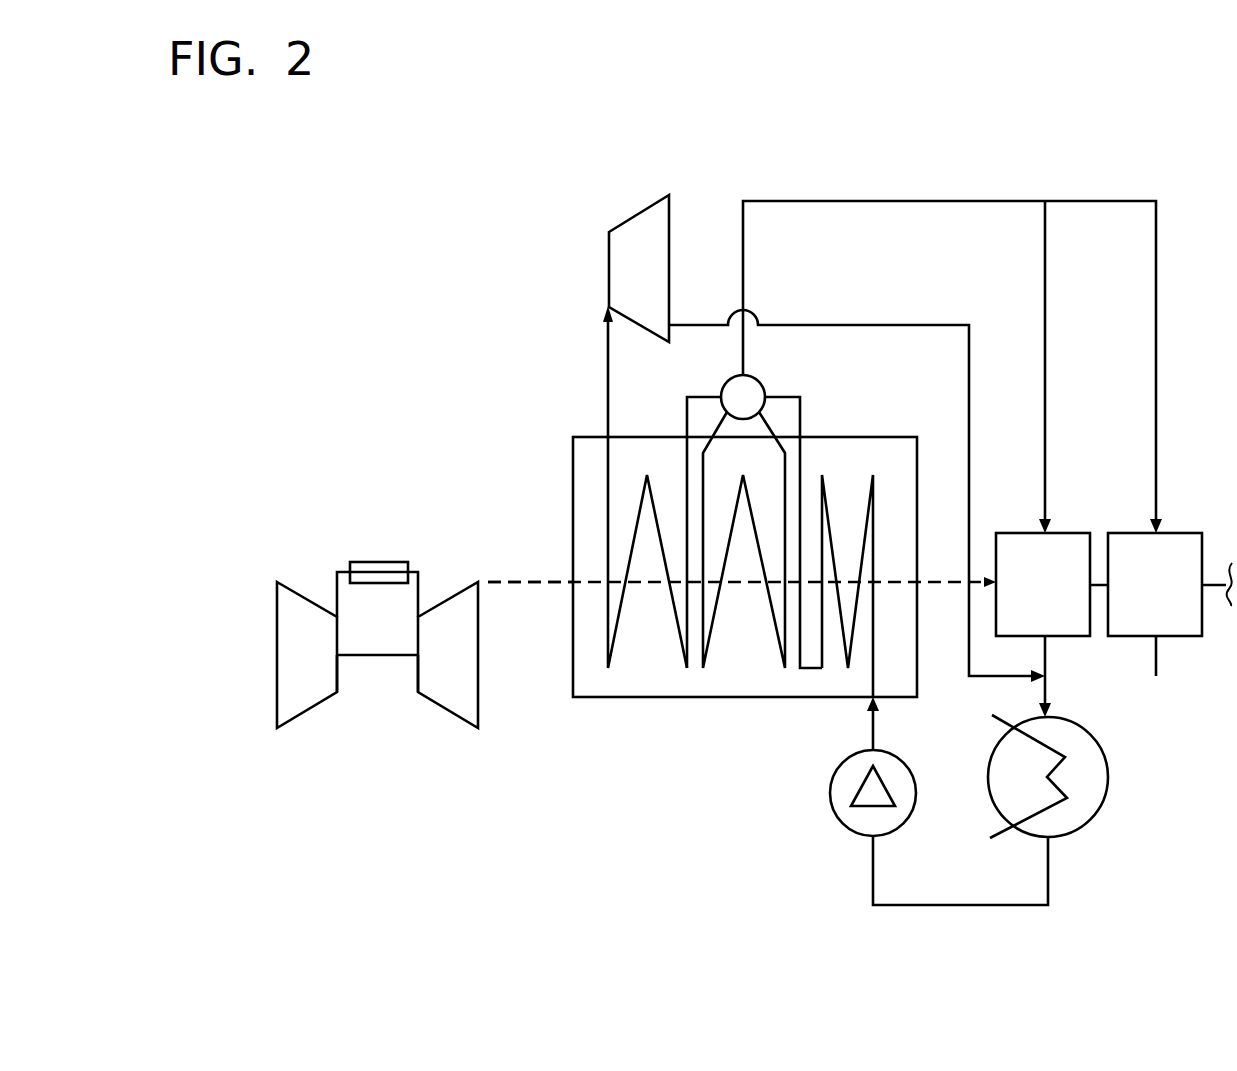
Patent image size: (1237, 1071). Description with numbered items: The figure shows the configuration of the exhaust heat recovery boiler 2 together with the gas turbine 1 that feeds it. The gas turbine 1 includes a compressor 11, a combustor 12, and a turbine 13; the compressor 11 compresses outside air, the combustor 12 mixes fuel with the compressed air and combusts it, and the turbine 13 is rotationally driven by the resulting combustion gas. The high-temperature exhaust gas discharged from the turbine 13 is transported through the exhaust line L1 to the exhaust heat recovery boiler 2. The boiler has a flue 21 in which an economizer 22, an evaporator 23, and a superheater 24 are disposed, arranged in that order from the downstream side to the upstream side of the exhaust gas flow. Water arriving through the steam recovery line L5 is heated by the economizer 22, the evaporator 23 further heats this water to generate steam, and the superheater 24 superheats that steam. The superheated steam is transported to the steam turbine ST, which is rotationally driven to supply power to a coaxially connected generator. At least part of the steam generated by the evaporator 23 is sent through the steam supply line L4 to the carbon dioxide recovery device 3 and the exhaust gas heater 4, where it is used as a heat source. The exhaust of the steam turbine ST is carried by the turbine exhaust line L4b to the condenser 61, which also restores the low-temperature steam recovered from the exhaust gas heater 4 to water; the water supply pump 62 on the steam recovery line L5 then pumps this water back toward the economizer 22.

The gas turbine 1 is at (379, 745).
The compressor 11 is at (293, 590).
The combustor 12 is at (370, 562).
The turbine 13 is at (447, 593).
The exhaust heat recovery boiler 2 is at (518, 155).
The flue 21 is at (643, 697).
The economizer 22 is at (875, 535).
The evaporator 23 is at (798, 395).
The superheater 24 is at (608, 475).
The carbon dioxide recovery device 3 is at (1073, 533).
The exhaust gas heater 4 is at (1186, 533).
The condenser 61 is at (1095, 813).
The water supply pump 62 is at (830, 798).
The steam turbine ST is at (640, 208).
The exhaust line L1 is at (538, 577).
The steam supply line L4 is at (842, 200).
The turbine exhaust line L4b is at (902, 323).
The steam recovery line L5 is at (1047, 690).